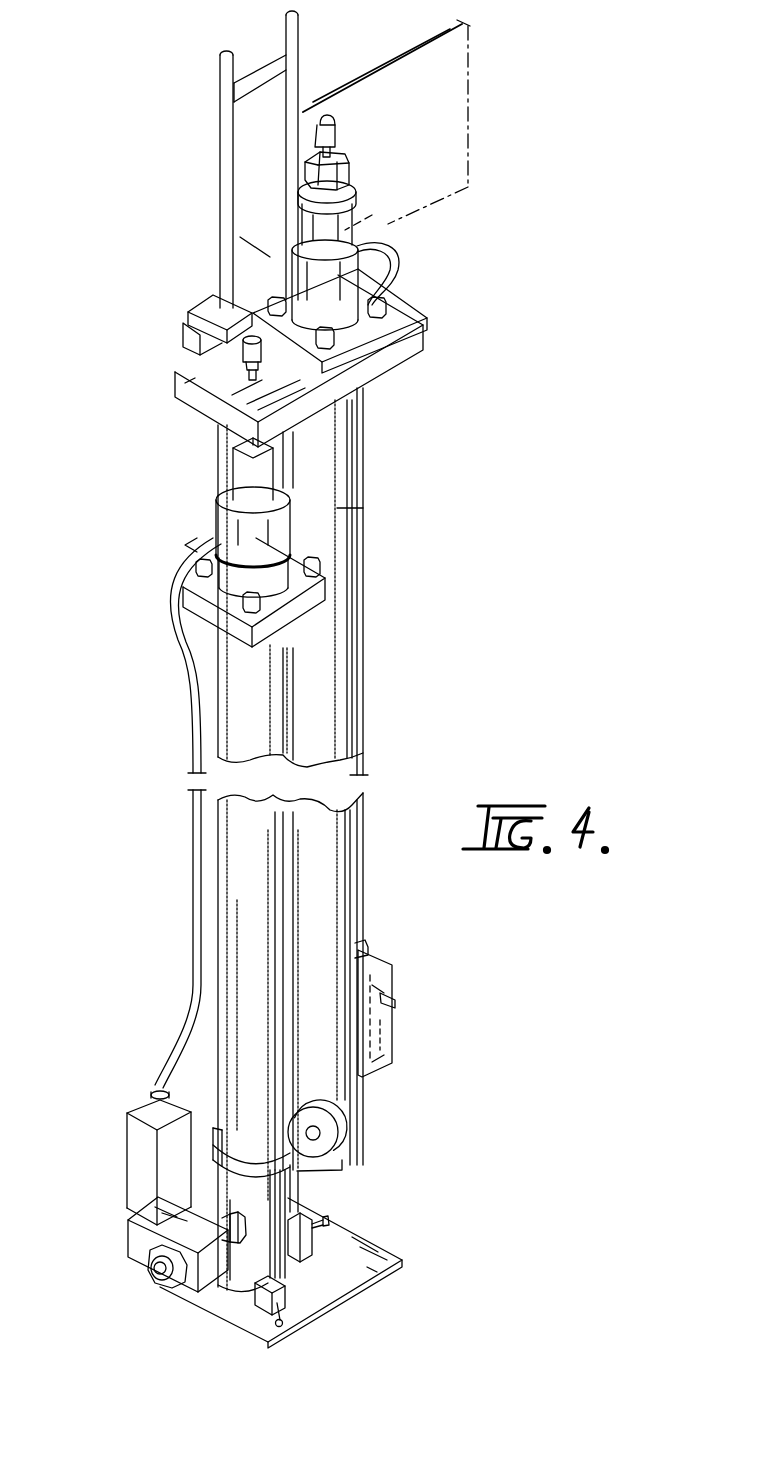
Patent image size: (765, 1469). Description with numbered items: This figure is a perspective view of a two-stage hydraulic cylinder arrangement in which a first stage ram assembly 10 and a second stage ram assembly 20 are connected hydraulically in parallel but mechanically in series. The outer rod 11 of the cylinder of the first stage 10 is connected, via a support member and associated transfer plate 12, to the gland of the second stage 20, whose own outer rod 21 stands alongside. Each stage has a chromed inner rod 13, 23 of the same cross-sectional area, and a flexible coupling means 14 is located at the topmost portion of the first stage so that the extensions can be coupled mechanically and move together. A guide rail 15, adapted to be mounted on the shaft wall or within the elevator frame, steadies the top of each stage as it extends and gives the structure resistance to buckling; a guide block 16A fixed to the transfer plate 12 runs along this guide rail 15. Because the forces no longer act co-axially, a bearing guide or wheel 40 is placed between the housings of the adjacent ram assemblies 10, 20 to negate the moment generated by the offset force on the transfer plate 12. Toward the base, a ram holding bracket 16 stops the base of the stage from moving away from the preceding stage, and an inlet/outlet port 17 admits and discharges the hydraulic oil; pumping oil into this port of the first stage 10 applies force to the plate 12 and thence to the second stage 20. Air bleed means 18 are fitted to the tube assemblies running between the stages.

The first stage ram assembly 10 is at (197, 856).
The outer rod 11 is at (232, 973).
The transfer plate 12 is at (173, 398).
The inner rod 13 is at (217, 510).
The flexible coupling means 14 is at (225, 480).
The guide rail 15 is at (283, 130).
The ram holding bracket 16 is at (212, 1147).
The guide block 16A is at (200, 305).
The inlet/outlet port 17 is at (128, 1240).
The air bleed means 18 is at (340, 126).
The second stage ram assembly 20 is at (363, 670).
The outer rod 21 is at (337, 508).
The inner rod 23 is at (333, 222).
The bearing guide or wheel 40 is at (330, 1133).